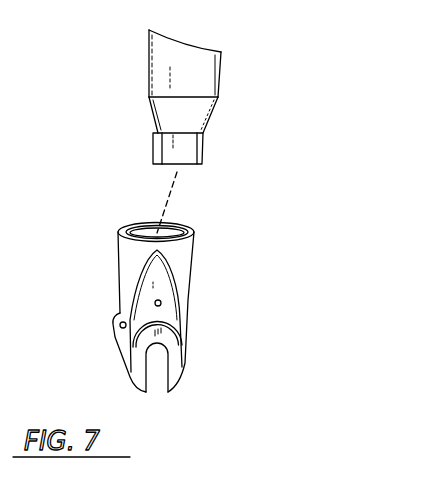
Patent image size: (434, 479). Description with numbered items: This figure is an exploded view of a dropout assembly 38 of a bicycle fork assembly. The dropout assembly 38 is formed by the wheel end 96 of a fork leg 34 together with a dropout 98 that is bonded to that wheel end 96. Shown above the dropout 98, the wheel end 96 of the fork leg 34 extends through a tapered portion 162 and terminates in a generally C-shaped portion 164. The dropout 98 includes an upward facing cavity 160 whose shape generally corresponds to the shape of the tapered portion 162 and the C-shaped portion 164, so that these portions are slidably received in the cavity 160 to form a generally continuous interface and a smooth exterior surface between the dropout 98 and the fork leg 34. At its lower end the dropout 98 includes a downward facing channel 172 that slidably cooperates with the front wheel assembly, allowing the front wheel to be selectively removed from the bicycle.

The fork leg 34 is at (200, 53).
The wheel end 96 is at (160, 70).
The tapered portion 162 is at (160, 110).
The C-shaped portion 164 is at (128, 158).
The dropout assembly 38 is at (250, 152).
The cavity 160 is at (188, 222).
The dropout 98 is at (190, 268).
The channel 172 is at (161, 380).